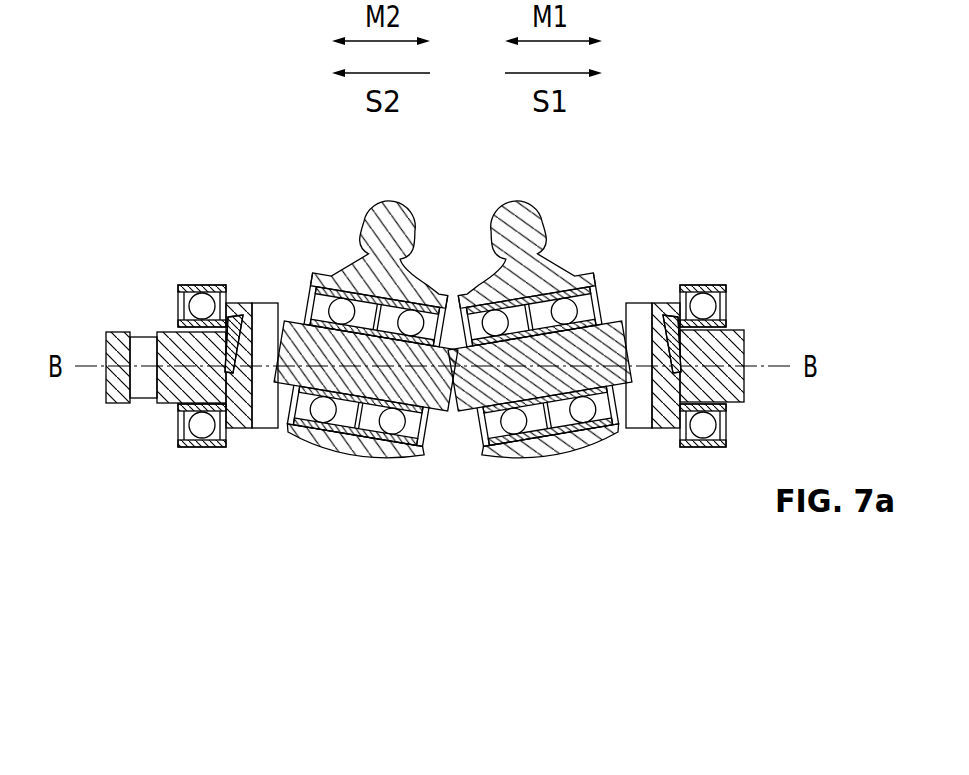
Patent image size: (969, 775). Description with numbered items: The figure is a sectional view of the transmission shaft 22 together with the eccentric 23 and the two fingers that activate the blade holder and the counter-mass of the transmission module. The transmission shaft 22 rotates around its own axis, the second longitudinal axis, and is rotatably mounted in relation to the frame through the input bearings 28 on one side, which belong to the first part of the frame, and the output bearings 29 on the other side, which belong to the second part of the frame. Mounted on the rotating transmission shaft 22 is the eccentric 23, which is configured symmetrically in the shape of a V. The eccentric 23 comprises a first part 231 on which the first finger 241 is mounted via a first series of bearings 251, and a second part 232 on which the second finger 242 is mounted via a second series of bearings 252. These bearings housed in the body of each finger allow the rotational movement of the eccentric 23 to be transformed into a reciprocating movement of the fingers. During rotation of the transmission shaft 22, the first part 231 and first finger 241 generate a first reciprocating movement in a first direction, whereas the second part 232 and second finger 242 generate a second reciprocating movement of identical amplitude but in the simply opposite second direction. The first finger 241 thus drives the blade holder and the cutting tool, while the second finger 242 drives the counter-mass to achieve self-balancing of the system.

The transmission shaft 22 is at (168, 342).
The eccentric 23 is at (460, 395).
The input bearings 28 is at (203, 292).
The output bearings 29 is at (712, 292).
The first part of the eccentric 231 is at (553, 368).
The second part of the eccentric 232 is at (274, 380).
The first finger 241 is at (507, 222).
The second finger 242 is at (392, 222).
The first series of bearings 251 is at (470, 393).
The second series of bearings 252 is at (297, 400).